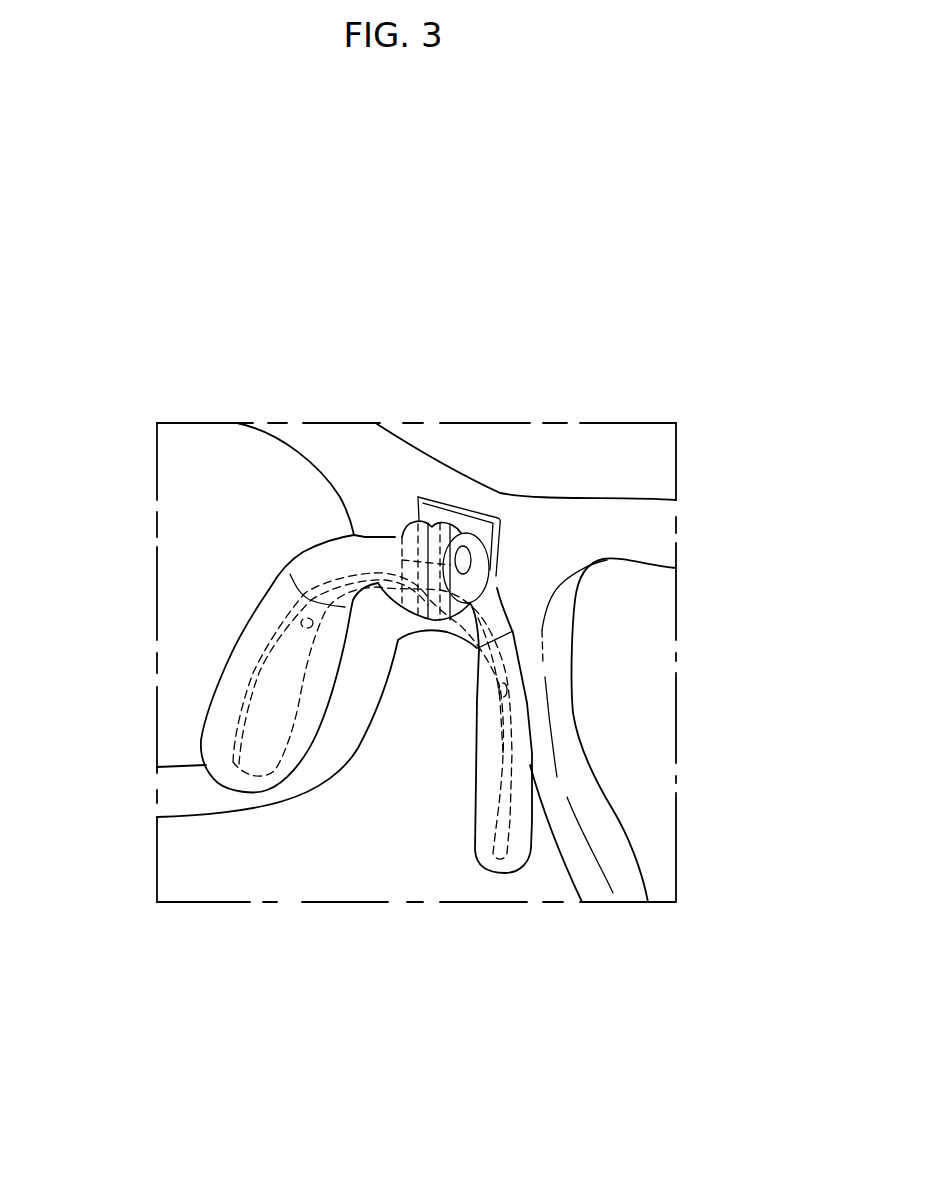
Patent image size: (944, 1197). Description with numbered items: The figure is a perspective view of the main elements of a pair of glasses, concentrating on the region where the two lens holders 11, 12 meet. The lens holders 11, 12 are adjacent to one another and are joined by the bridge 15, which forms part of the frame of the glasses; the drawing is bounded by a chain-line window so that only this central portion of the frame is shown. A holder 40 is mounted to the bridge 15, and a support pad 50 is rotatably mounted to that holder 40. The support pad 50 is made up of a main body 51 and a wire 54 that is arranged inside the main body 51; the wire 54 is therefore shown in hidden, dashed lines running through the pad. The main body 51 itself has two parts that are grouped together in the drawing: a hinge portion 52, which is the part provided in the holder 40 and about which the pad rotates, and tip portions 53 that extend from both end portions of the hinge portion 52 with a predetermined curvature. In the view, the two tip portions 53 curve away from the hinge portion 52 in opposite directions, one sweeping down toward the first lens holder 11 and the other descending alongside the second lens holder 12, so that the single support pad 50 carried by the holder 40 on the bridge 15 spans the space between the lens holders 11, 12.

The lens holder 11 is at (193, 798).
The lens holder 12 is at (588, 837).
The bridge 15 is at (493, 510).
The holder 40 is at (440, 527).
The support pad 50 is at (484, 872).
The main body 51 is at (203, 283).
The hinge portion 52 is at (393, 536).
The tip portion 53 is at (248, 653).
The wire 54 is at (264, 742).